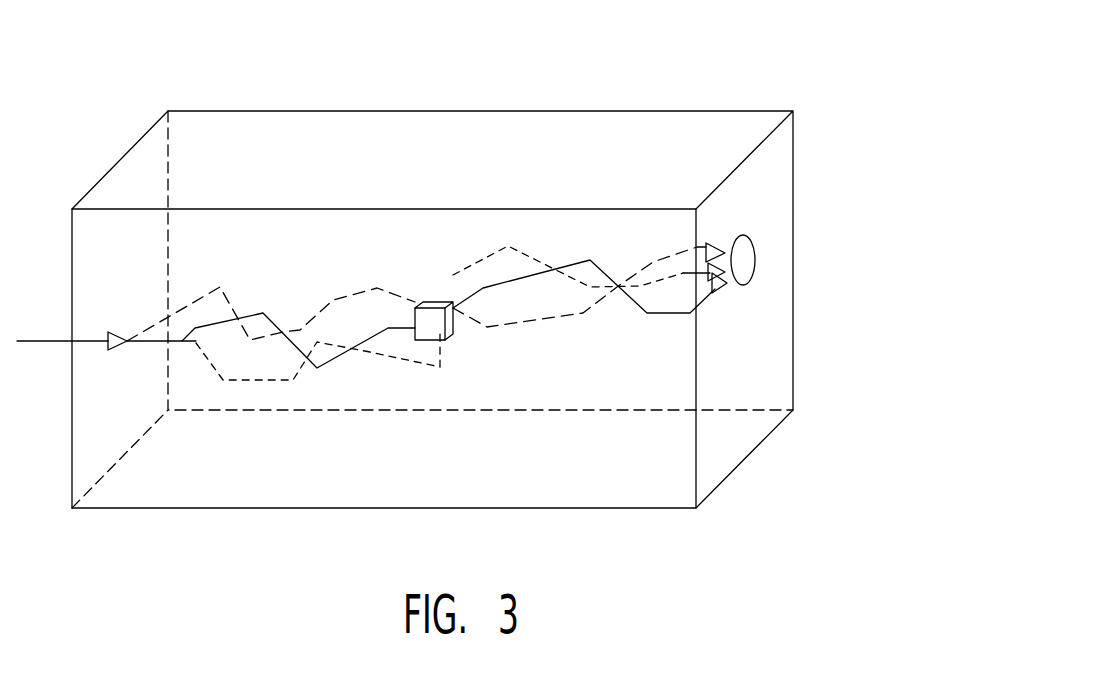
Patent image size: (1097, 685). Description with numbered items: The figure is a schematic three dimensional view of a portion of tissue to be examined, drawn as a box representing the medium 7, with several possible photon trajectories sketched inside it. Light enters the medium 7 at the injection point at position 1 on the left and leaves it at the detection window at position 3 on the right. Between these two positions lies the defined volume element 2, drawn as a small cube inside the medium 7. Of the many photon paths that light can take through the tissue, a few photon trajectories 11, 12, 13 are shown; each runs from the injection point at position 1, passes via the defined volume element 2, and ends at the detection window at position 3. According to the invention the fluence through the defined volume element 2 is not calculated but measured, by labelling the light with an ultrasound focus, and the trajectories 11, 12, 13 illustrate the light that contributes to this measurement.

The injection point 1 is at (127, 340).
The defined volume element 2 is at (433, 323).
The detection window 3 is at (740, 257).
The medium 7 is at (713, 122).
The photon trajectory 11 is at (237, 383).
The photon trajectory 12 is at (262, 313).
The photon trajectory 13 is at (655, 260).